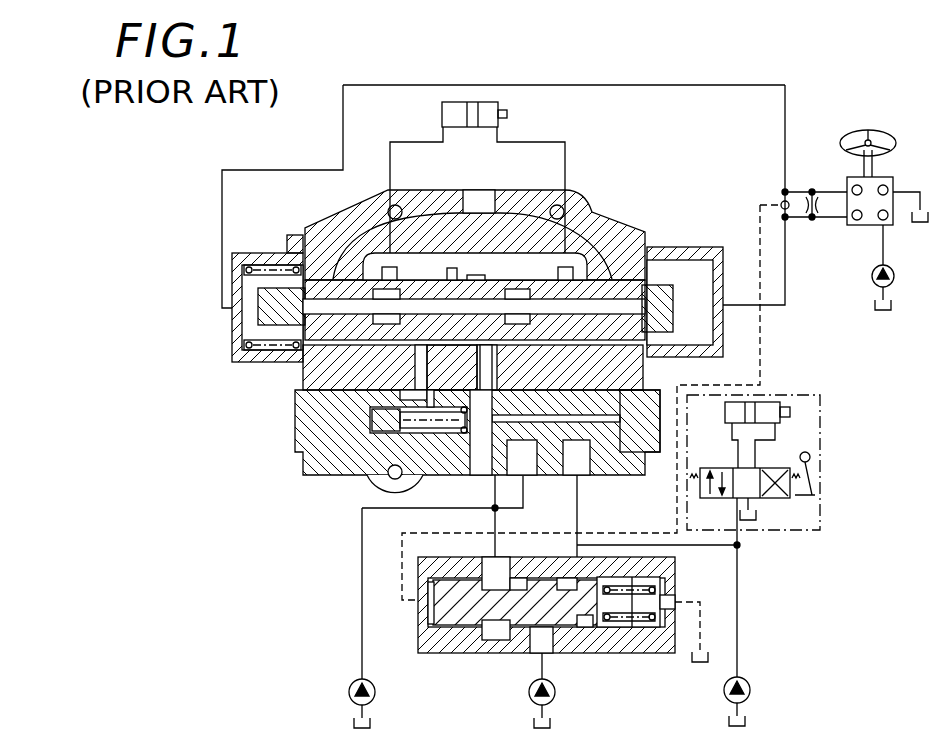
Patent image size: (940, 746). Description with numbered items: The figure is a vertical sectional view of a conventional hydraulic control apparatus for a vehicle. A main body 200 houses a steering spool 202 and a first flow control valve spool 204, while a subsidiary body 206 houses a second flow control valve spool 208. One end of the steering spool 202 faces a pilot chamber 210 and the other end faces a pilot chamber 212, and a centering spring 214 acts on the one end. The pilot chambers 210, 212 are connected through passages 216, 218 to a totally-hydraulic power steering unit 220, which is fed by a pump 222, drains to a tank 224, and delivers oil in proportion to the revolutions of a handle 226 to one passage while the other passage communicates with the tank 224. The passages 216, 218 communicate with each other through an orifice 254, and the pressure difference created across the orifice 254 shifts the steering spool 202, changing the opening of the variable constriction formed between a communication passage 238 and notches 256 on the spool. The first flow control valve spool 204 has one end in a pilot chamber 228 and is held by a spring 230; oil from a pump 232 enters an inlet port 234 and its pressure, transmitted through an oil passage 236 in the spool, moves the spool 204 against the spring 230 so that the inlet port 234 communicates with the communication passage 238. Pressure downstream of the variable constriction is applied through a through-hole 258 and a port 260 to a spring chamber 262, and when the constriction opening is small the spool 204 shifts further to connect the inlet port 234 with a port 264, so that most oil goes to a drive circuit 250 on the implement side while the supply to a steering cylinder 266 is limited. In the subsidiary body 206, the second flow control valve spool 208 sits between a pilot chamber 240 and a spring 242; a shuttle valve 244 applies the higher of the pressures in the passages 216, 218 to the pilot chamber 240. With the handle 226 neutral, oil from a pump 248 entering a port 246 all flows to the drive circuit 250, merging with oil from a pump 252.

The main body 200 is at (338, 223).
The steering spool 202 is at (606, 278).
The first flow control valve spool 204 is at (628, 445).
The subsidiary body 206 is at (658, 640).
The second flow control valve spool 208 is at (460, 630).
The pilot chamber 210 is at (243, 327).
The pilot chamber 212 is at (692, 268).
The centering spring 214 is at (249, 266).
The passage 216 is at (683, 85).
The passage 218 is at (786, 270).
The totally-hydraulic power steering unit 220 is at (893, 180).
The pump 222 is at (872, 278).
The tank 224 is at (920, 223).
The handle 226 is at (878, 130).
The pilot chamber 228 is at (684, 437).
The spring 230 is at (373, 448).
The pump 232 is at (350, 696).
The inlet port 234 is at (533, 462).
The oil passage 236 is at (513, 448).
The communication passage 238 is at (492, 360).
The pilot chamber 240 is at (432, 626).
The spring 242 is at (662, 590).
The shuttle valve 244 is at (780, 204).
The port 246 is at (546, 638).
The pump 248 is at (531, 704).
The drive circuit 250 is at (822, 510).
The pump 252 is at (750, 692).
The orifice 254 is at (819, 197).
The notches 256 is at (503, 262).
The through-hole 258 is at (420, 367).
The port 260 is at (432, 440).
The spring chamber 262 is at (380, 422).
The port 264 is at (587, 462).
The steering cylinder 266 is at (442, 118).